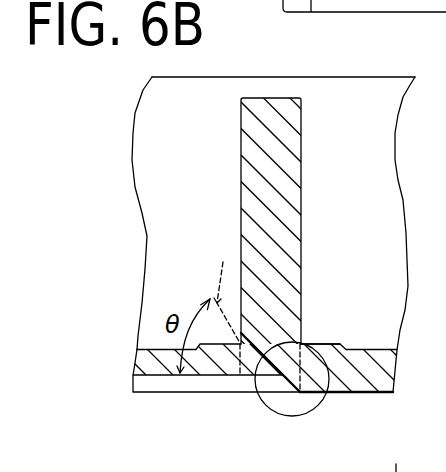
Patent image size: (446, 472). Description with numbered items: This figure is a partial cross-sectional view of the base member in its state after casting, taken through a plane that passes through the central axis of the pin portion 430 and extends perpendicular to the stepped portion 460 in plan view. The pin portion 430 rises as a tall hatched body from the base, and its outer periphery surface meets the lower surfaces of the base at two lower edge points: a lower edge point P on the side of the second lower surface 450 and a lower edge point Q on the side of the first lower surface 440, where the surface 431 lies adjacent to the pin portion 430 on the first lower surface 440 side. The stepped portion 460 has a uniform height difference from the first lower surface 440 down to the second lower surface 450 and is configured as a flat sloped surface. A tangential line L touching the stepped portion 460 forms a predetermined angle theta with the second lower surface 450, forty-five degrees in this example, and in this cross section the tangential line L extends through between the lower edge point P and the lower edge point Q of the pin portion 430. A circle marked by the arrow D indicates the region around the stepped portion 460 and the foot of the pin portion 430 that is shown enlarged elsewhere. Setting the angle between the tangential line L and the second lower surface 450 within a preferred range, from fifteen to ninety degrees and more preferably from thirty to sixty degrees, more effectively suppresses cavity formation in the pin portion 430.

The pin portion 430 is at (301, 195).
The top surface portion 431 is at (331, 344).
The first lower surface 440 is at (336, 393).
The second lower surface 450 is at (163, 380).
The stepped portion 460 is at (287, 385).
The arrow D is at (262, 405).
The lower edge point P is at (240, 343).
The lower edge point Q is at (301, 344).
The tangential line L is at (227, 291).